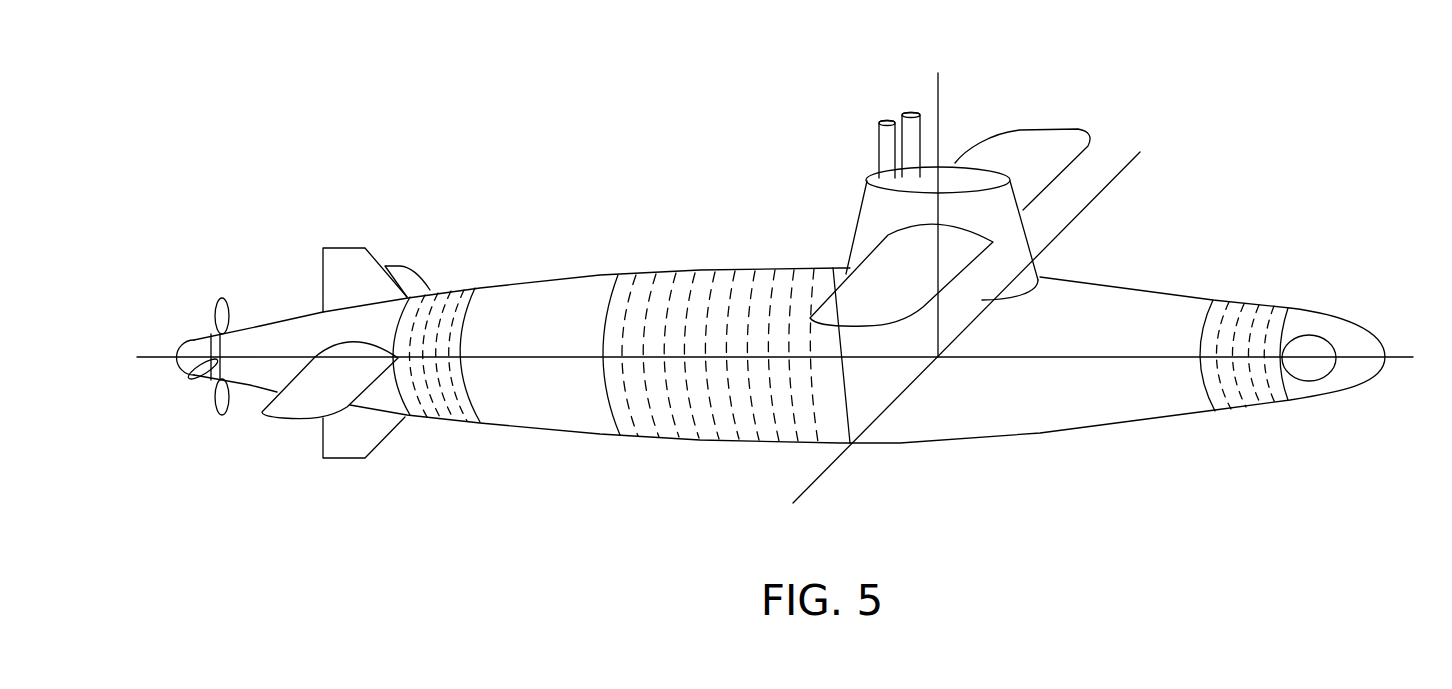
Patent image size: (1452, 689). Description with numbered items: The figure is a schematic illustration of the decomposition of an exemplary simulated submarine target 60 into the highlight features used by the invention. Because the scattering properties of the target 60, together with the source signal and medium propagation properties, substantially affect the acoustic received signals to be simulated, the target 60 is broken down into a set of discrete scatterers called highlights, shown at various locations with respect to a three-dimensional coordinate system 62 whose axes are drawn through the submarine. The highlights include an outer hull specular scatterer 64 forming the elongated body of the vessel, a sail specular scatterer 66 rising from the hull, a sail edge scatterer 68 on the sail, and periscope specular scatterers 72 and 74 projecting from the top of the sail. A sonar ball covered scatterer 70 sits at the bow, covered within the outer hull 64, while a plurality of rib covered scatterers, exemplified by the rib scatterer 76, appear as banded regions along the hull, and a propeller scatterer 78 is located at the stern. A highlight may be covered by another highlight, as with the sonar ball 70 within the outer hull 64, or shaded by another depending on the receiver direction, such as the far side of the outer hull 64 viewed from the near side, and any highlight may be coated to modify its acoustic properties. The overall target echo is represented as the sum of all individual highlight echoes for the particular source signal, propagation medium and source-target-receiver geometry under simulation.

The simulated submarine target 60 is at (782, 274).
The three-dimensional coordinate system 62 is at (942, 97).
The outer hull specular scatterer 64 is at (1173, 290).
The sail specular scatterer 66 is at (877, 203).
The sail edge scatterer 68 is at (850, 234).
The sonar ball covered scatterer 70 is at (1309, 370).
The periscope specular scatterer 72 is at (910, 113).
The periscope specular scatterer 74 is at (878, 140).
The rib scatterer 76 is at (710, 415).
The propeller scatterer 78 is at (226, 298).